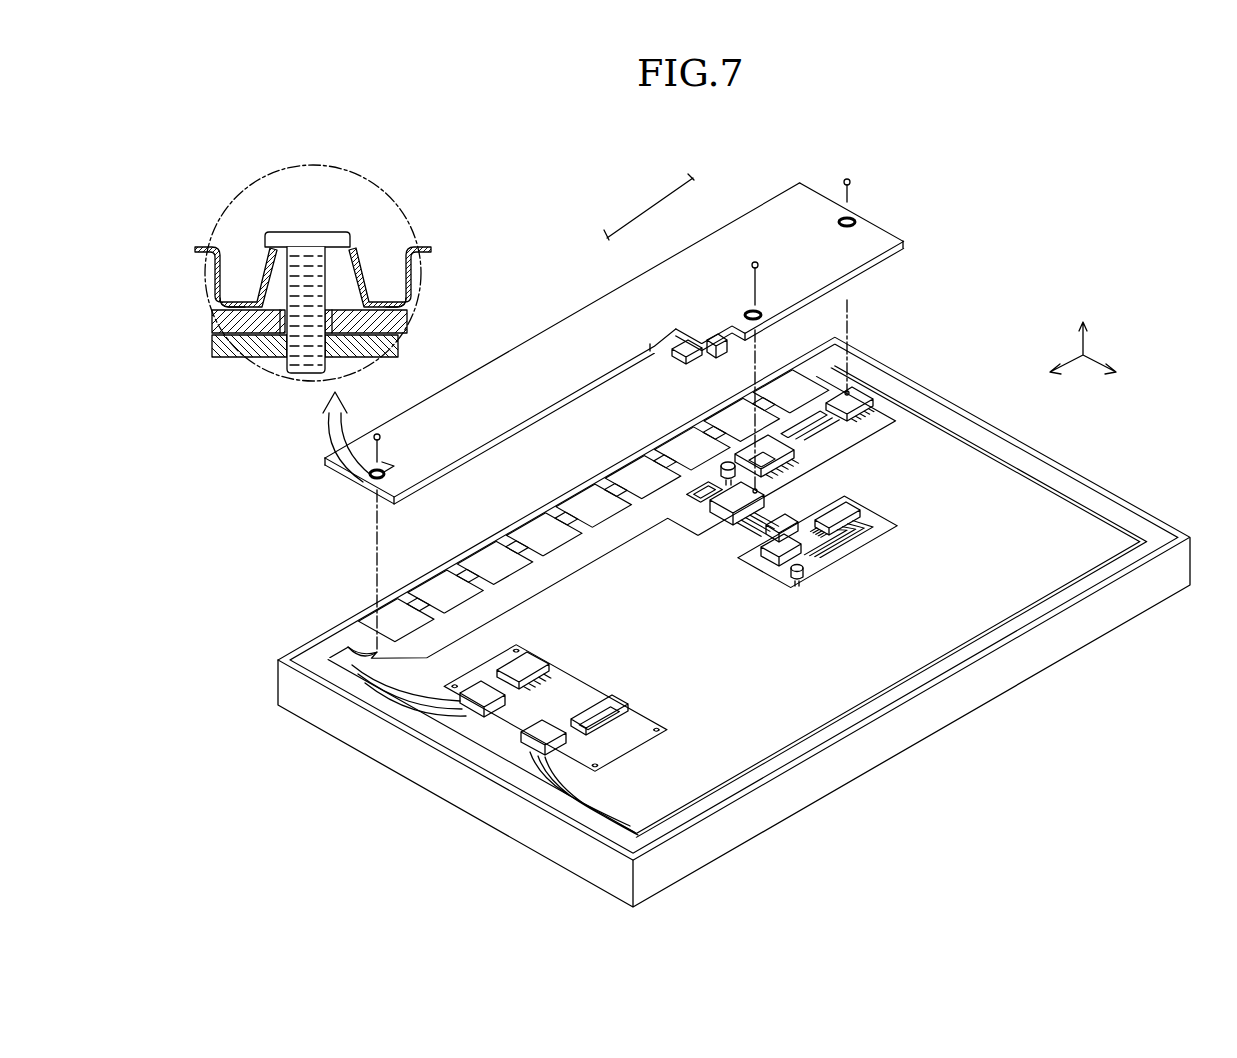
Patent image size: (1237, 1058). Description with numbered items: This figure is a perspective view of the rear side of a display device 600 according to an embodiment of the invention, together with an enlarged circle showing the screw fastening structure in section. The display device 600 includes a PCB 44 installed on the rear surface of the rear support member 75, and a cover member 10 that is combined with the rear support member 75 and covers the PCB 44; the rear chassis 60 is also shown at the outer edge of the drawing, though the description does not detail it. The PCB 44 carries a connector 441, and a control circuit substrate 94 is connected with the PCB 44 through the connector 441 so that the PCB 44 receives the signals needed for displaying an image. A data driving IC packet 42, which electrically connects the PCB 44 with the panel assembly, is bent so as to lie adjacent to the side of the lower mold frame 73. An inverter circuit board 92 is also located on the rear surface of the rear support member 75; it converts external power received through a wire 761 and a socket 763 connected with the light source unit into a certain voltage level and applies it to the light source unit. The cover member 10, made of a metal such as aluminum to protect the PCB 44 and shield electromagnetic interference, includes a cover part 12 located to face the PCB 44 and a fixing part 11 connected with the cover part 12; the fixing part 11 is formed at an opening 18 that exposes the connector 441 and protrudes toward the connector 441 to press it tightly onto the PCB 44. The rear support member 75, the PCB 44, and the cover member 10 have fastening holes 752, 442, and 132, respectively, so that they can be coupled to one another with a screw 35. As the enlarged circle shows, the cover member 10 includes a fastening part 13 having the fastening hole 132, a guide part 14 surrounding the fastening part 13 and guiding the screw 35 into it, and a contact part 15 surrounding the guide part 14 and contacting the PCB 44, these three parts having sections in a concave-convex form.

The display device 600 is at (778, 141).
The cover member 10 is at (614, 339).
The fixing part 11 is at (698, 328).
The cover part 12 is at (695, 257).
The fastening part 13 is at (228, 302).
The fastening hole 132 is at (233, 326).
The guide part 14 is at (355, 250).
The contact part 15 is at (396, 300).
The opening 18 is at (738, 330).
The screw 35 is at (849, 182).
The data driving IC packet 42 is at (447, 588).
The PCB 44 is at (882, 420).
The connector 441 is at (688, 497).
The fastening hole 442 is at (377, 650).
The bottom chassis 60 is at (1190, 560).
The lower mold frame 73 is at (942, 413).
The rear support member 75 is at (1050, 523).
The fastening hole 752 is at (282, 362).
The wire 761 is at (462, 710).
The socket 763 is at (495, 720).
The inverter circuit board 92 is at (628, 744).
The control circuit substrate 94 is at (872, 505).